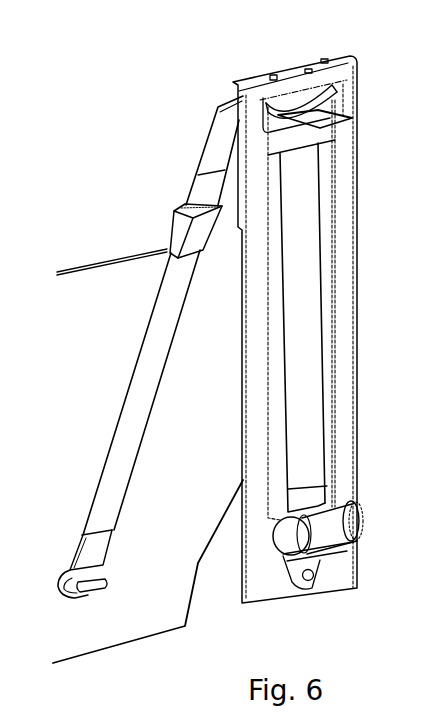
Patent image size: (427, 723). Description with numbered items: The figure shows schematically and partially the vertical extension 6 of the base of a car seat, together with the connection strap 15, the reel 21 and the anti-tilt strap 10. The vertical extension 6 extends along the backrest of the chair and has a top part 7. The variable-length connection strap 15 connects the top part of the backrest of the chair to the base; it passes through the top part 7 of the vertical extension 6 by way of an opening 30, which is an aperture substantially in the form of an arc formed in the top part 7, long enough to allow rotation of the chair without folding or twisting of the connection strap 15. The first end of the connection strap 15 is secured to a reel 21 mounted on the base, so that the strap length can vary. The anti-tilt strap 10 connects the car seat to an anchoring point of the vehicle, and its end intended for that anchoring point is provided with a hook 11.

The vertical extension 6 is at (345, 220).
The top part 7 is at (343, 103).
The opening 30 is at (318, 106).
The connection strap 15 is at (308, 353).
The reel 21 is at (330, 528).
The anti-tilt strap 10 is at (174, 293).
The hook 11 is at (80, 583).